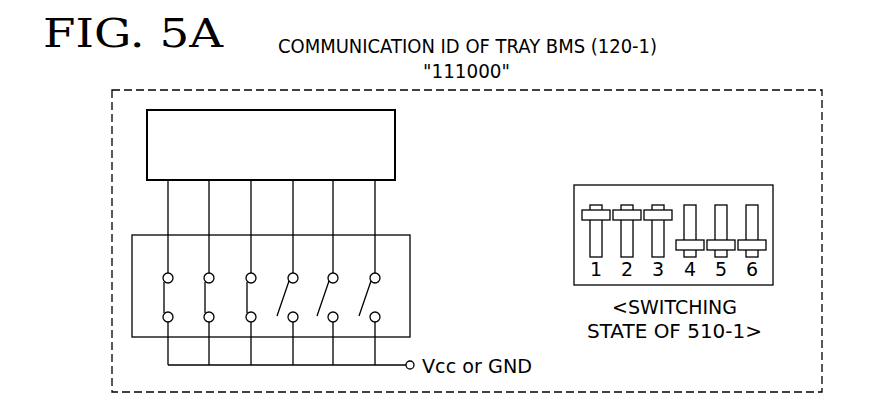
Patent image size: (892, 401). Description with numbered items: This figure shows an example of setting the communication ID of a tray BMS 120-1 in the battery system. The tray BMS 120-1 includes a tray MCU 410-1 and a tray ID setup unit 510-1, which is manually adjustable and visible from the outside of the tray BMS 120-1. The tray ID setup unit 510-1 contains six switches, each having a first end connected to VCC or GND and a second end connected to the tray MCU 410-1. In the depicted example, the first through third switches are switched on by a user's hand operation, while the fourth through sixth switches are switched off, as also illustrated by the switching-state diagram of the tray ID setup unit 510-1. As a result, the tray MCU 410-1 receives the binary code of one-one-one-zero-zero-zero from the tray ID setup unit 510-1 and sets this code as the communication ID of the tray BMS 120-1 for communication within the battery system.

The tray BMS 120-1 is at (717, 90).
The tray MCU 410-1 is at (395, 157).
The tray ID setup unit 510-1 is at (410, 292).